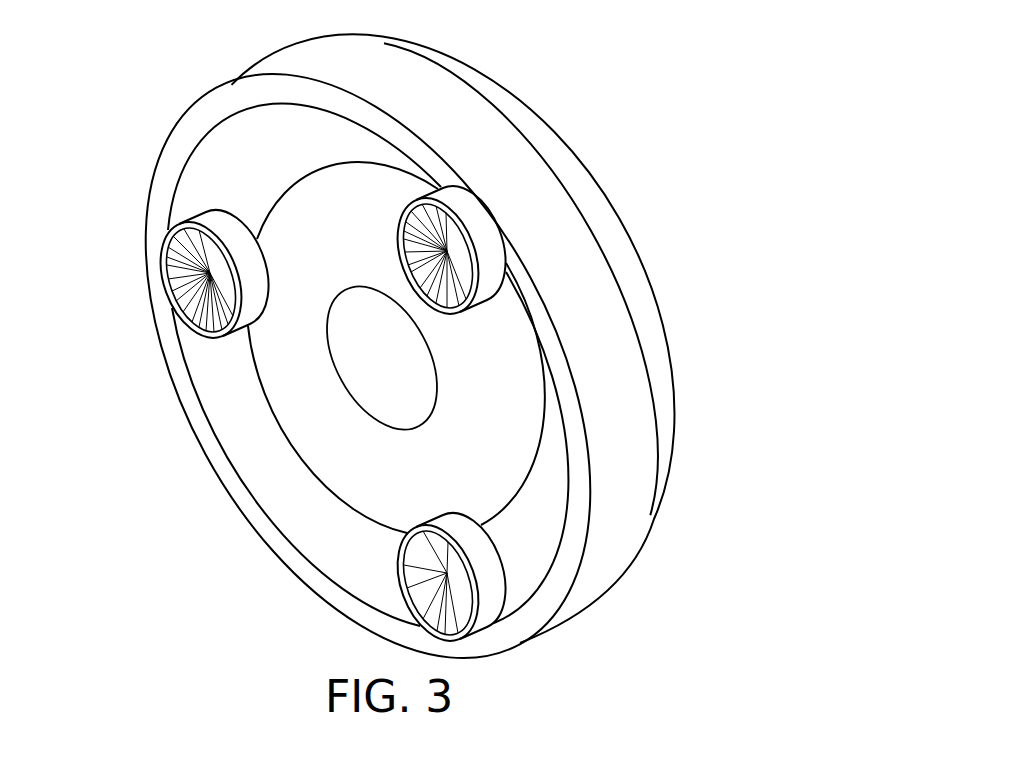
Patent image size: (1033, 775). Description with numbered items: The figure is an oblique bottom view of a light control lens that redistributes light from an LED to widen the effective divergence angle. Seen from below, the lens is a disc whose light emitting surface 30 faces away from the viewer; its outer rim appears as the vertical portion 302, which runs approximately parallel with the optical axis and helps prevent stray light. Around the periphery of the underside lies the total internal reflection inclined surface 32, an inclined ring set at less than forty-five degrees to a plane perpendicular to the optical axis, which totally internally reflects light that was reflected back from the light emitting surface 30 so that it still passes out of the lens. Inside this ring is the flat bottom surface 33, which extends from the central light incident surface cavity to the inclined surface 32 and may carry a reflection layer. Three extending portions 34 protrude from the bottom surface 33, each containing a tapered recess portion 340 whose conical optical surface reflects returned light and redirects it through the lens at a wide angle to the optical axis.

The light emitting surface 30 is at (607, 225).
The vertical portion 302 is at (610, 370).
The total internal reflection inclined surface 32 is at (273, 478).
The bottom surface 33 is at (300, 407).
The extending portion 34 is at (222, 228).
The tapered recess portion 340 is at (178, 276).